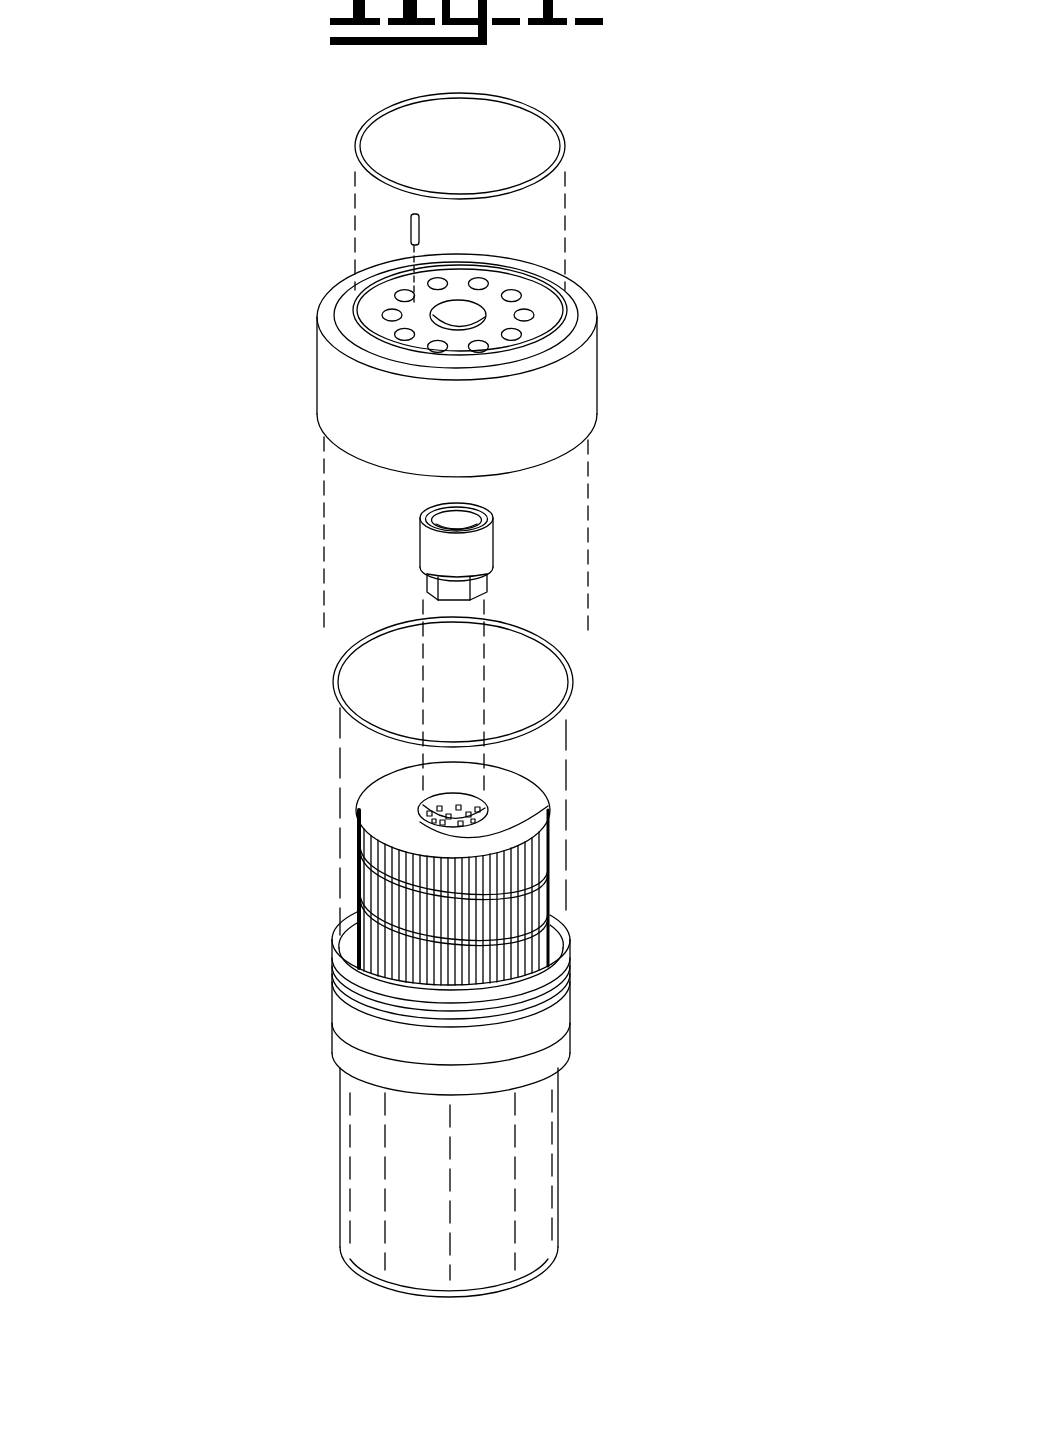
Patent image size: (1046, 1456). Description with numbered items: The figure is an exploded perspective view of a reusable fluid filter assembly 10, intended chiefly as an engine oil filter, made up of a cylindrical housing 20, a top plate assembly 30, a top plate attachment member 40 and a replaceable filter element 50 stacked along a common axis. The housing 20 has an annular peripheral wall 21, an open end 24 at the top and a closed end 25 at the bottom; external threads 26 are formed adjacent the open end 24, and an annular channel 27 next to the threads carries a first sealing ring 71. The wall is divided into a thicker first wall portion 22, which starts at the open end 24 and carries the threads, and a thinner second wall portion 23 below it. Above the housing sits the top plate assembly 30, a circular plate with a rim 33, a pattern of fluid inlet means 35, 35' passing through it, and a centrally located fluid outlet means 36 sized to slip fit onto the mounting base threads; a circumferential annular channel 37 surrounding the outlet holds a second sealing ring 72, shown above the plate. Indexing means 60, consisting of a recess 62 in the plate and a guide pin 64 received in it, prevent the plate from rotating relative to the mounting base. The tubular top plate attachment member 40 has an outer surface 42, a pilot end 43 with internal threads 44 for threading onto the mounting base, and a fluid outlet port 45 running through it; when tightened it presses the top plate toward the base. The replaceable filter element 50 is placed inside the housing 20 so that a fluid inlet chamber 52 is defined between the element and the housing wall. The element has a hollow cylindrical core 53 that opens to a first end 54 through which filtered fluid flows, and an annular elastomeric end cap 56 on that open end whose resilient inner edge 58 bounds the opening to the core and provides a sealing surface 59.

The reusable fluid filter assembly 10 is at (423, 1002).
The cylindrical housing 20 is at (520, 1182).
The annular peripheral wall 21 is at (560, 1172).
The first wall portion 22 is at (563, 1043).
The second wall portion 23 is at (560, 1083).
The open end 24 is at (570, 927).
The closed end 25 is at (540, 1270).
The external threads 26 is at (568, 995).
The annular channel 27 is at (565, 1025).
The top plate assembly 30 is at (442, 401).
The rim 33 is at (583, 452).
The fluid inlet means 35 is at (541, 305).
The fluid inlet means 35' is at (603, 266).
The fluid outlet means 36 is at (462, 318).
The circumferential annular channel 37 is at (362, 331).
The top plate attachment member 40 is at (514, 645).
The outer surface 42 is at (443, 553).
The pilot end 43 is at (427, 527).
The internal threads 44 is at (430, 532).
The fluid outlet port 45 is at (452, 600).
The replaceable filter element 50 is at (493, 871).
The fluid inlet chamber 52 is at (352, 917).
The hollow cylindrical core 53 is at (420, 810).
The first end 54 is at (363, 793).
The annular end cap 56 is at (396, 832).
The resilient inner edge 58 is at (490, 806).
The sealing surface 59 is at (463, 828).
The indexing means 60 is at (205, 202).
The recess 62 is at (407, 297).
The guide pin 64 is at (411, 230).
The first sealing ring 71 is at (576, 682).
The second sealing ring 72 is at (557, 122).